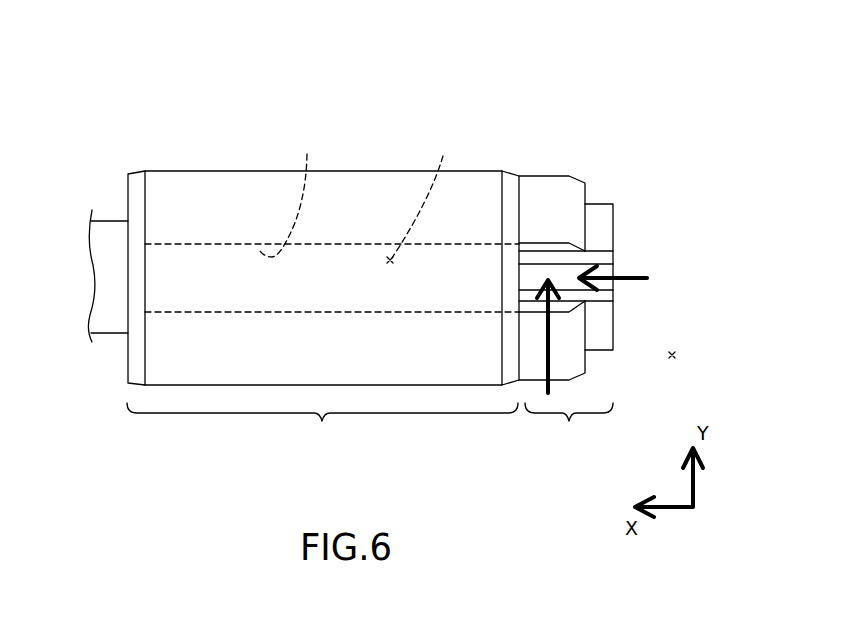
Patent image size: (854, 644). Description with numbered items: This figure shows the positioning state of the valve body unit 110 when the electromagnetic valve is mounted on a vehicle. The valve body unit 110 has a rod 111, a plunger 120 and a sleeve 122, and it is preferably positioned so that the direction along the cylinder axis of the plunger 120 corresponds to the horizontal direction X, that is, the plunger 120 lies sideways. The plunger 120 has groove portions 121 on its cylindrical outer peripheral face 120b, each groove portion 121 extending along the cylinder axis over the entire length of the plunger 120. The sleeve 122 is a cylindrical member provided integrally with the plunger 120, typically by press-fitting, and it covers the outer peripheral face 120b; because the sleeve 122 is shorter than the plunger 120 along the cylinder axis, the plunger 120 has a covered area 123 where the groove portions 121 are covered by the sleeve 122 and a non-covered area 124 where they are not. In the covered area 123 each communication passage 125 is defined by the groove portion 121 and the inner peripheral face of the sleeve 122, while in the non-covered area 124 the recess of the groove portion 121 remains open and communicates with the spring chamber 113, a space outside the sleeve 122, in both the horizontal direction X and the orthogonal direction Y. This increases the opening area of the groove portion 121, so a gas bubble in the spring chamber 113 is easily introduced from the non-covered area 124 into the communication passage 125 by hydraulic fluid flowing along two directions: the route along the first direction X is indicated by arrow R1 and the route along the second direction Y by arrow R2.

The valve body unit 110 is at (531, 105).
The rod 111 is at (104, 323).
The spring chamber 113 is at (674, 354).
The plunger 120 is at (615, 245).
The outer peripheral face 120b is at (534, 183).
The groove portion 121 is at (633, 214).
The sleeve 122 is at (362, 171).
The covered area 123 is at (322, 428).
The non-covered area 124 is at (569, 429).
The communication passage 125 is at (424, 197).
The arrow R1 is at (625, 282).
The arrow R2 is at (552, 352).